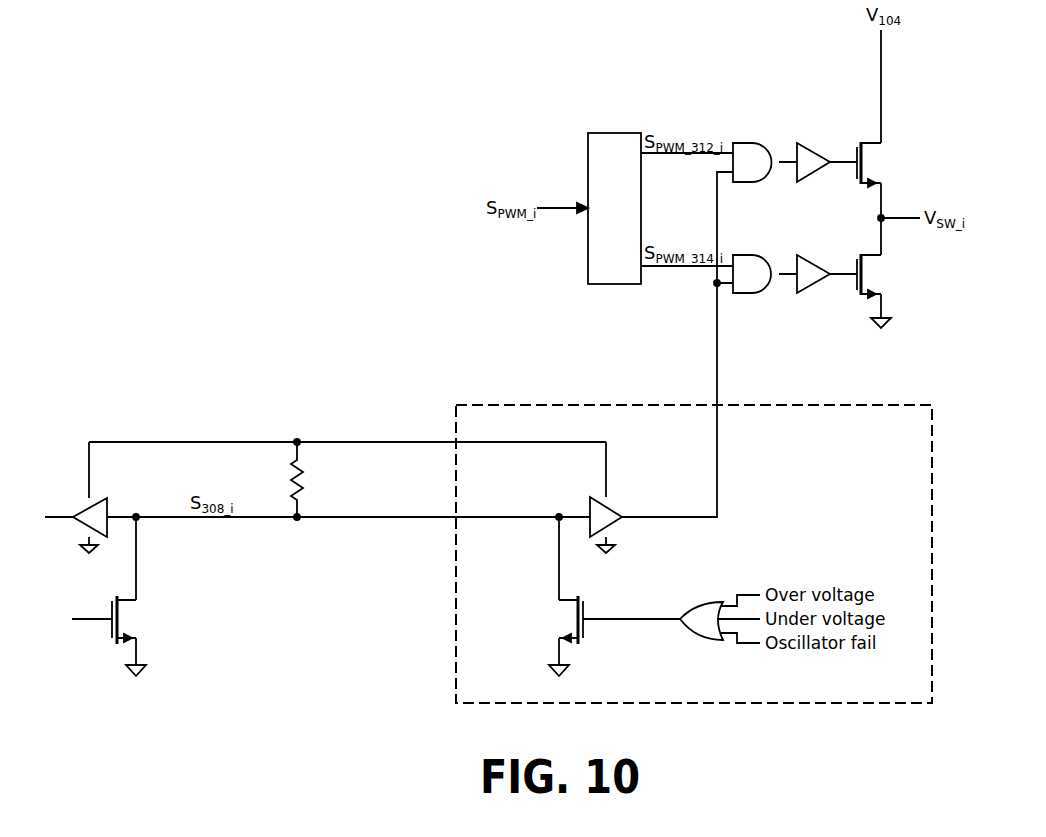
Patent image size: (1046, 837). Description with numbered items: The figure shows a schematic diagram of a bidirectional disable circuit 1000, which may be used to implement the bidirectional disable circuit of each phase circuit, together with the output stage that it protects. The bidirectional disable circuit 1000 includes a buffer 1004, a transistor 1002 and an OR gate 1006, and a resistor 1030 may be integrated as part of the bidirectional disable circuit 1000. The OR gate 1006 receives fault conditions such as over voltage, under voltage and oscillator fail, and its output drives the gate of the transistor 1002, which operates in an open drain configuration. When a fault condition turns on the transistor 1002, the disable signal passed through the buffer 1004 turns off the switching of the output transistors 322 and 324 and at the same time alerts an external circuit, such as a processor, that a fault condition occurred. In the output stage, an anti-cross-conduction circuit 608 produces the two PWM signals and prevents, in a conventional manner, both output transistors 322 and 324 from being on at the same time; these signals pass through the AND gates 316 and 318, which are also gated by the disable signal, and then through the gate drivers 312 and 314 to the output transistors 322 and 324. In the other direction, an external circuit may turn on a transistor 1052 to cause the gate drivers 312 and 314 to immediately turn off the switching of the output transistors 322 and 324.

The anti-cross-conduction circuit 608 is at (636, 133).
The AND gate 316 is at (745, 143).
The AND gate 318 is at (745, 255).
The gate driver 312 is at (815, 148).
The gate driver 314 is at (815, 260).
The output transistor 322 is at (858, 184).
The output transistor 324 is at (868, 287).
The bidirectional disable circuit 1000 is at (456, 405).
The resistor 1030 is at (304, 480).
The buffer 1004 is at (587, 507).
The transistor 1002 is at (576, 627).
The OR gate 1006 is at (692, 606).
The transistor 1052 is at (123, 629).